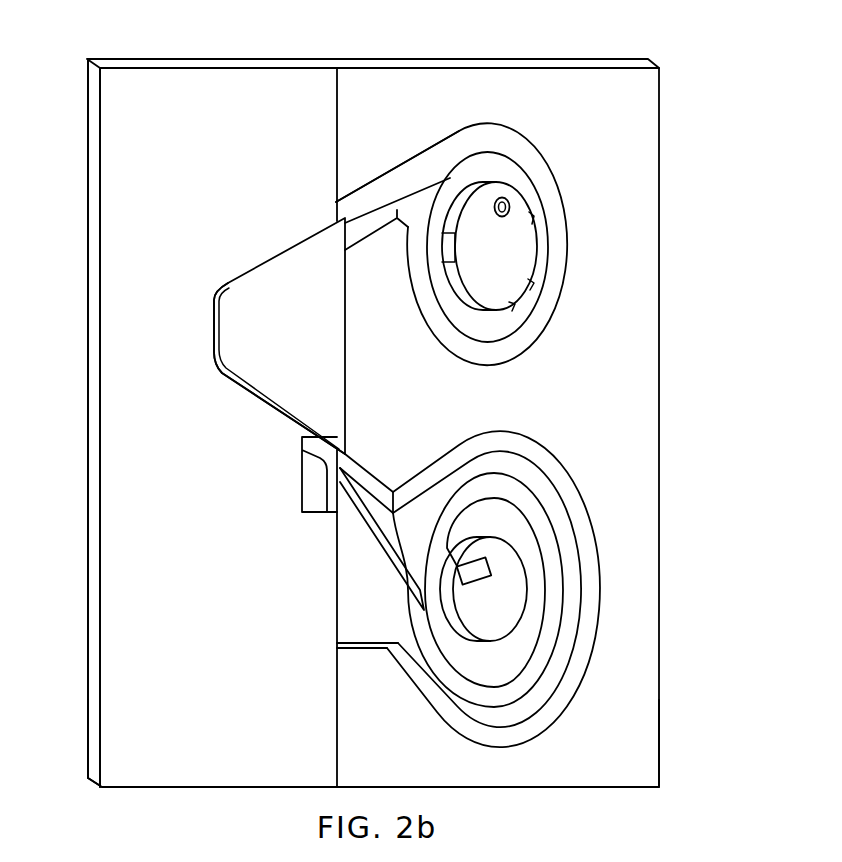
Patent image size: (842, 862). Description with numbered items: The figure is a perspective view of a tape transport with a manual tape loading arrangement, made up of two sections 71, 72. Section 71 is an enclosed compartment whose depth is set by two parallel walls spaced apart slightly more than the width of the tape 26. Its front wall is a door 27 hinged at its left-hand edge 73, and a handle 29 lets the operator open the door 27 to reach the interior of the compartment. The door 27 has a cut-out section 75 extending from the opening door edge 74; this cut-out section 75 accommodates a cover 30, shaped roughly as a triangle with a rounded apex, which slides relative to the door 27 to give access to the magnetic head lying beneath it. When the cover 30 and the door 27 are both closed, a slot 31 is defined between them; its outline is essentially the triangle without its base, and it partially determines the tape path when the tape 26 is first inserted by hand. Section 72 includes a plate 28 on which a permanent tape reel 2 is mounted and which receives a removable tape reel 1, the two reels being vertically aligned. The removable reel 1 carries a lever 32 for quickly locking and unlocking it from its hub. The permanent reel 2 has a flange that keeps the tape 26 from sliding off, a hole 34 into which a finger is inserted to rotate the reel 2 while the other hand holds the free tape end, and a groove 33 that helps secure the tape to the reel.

The removable tape reel 1 is at (495, 607).
The permanent tape reel 2 is at (498, 260).
The tape 26 is at (377, 532).
The door 27 is at (117, 713).
The plate 28 is at (616, 746).
The handle 29 is at (313, 495).
The cover 30 is at (235, 314).
The slot 31 is at (219, 370).
The lever 32 is at (470, 573).
The groove 33 is at (609, 110).
The hole 34 is at (508, 203).
The section 71 is at (223, 67).
The section 72 is at (577, 67).
The left-hand edge 73 is at (99, 137).
The opening door edge 74 is at (342, 73).
The cut-out section 75 is at (247, 399).